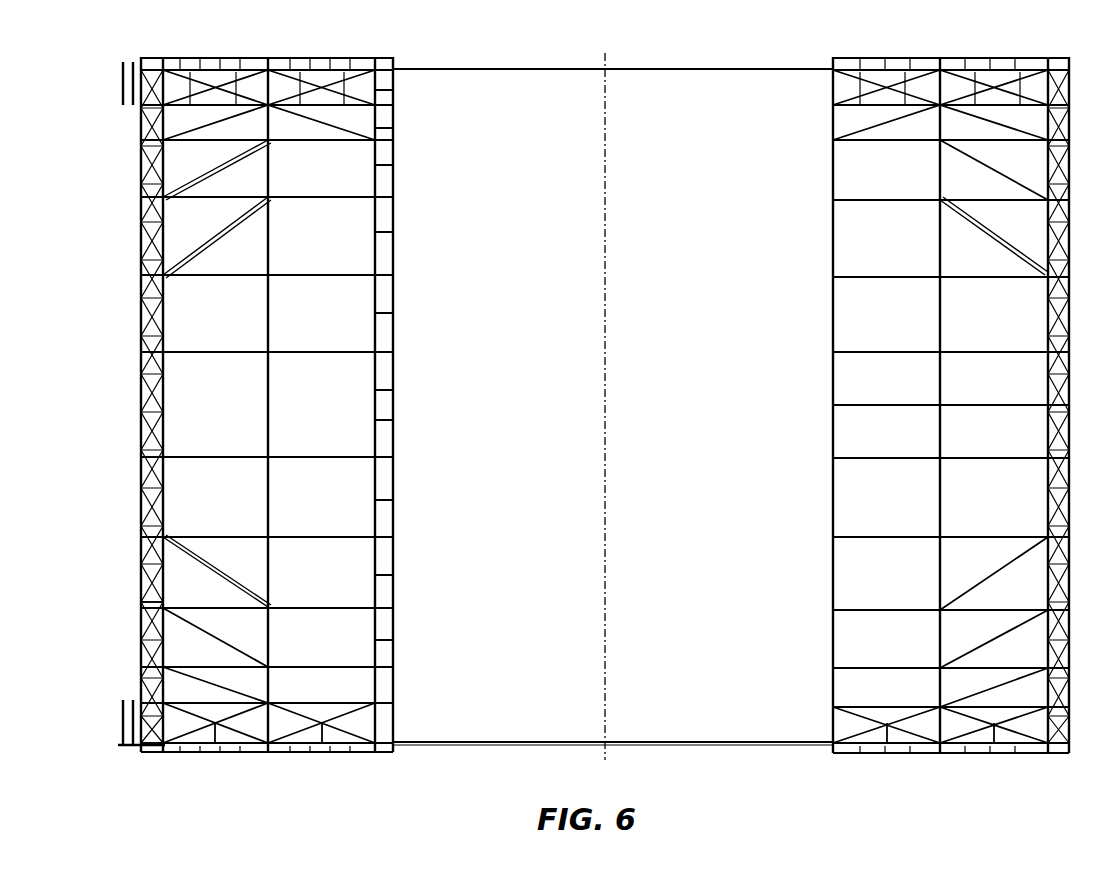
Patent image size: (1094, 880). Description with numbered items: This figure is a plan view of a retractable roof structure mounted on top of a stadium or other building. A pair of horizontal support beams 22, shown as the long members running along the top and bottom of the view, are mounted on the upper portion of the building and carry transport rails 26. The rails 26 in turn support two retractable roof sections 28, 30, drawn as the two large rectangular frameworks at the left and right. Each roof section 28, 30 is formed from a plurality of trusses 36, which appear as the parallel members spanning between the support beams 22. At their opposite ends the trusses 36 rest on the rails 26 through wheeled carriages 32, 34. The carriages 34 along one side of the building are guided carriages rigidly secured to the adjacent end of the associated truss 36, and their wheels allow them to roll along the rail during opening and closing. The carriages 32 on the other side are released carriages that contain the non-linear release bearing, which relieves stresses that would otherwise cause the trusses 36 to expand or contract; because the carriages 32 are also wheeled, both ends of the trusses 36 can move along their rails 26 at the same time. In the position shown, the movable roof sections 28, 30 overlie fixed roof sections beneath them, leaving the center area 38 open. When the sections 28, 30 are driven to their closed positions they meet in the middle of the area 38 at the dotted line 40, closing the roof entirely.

The horizontal support beams 22 is at (680, 52).
The transport rails 26 is at (454, 748).
The retractable roof section 28 is at (255, 404).
The retractable roof section 30 is at (951, 405).
The released carriages 32 is at (165, 755).
The guided carriages 34 is at (164, 58).
The truss 36 is at (268, 556).
The center area 38 is at (664, 300).
The dotted line 40 is at (607, 578).